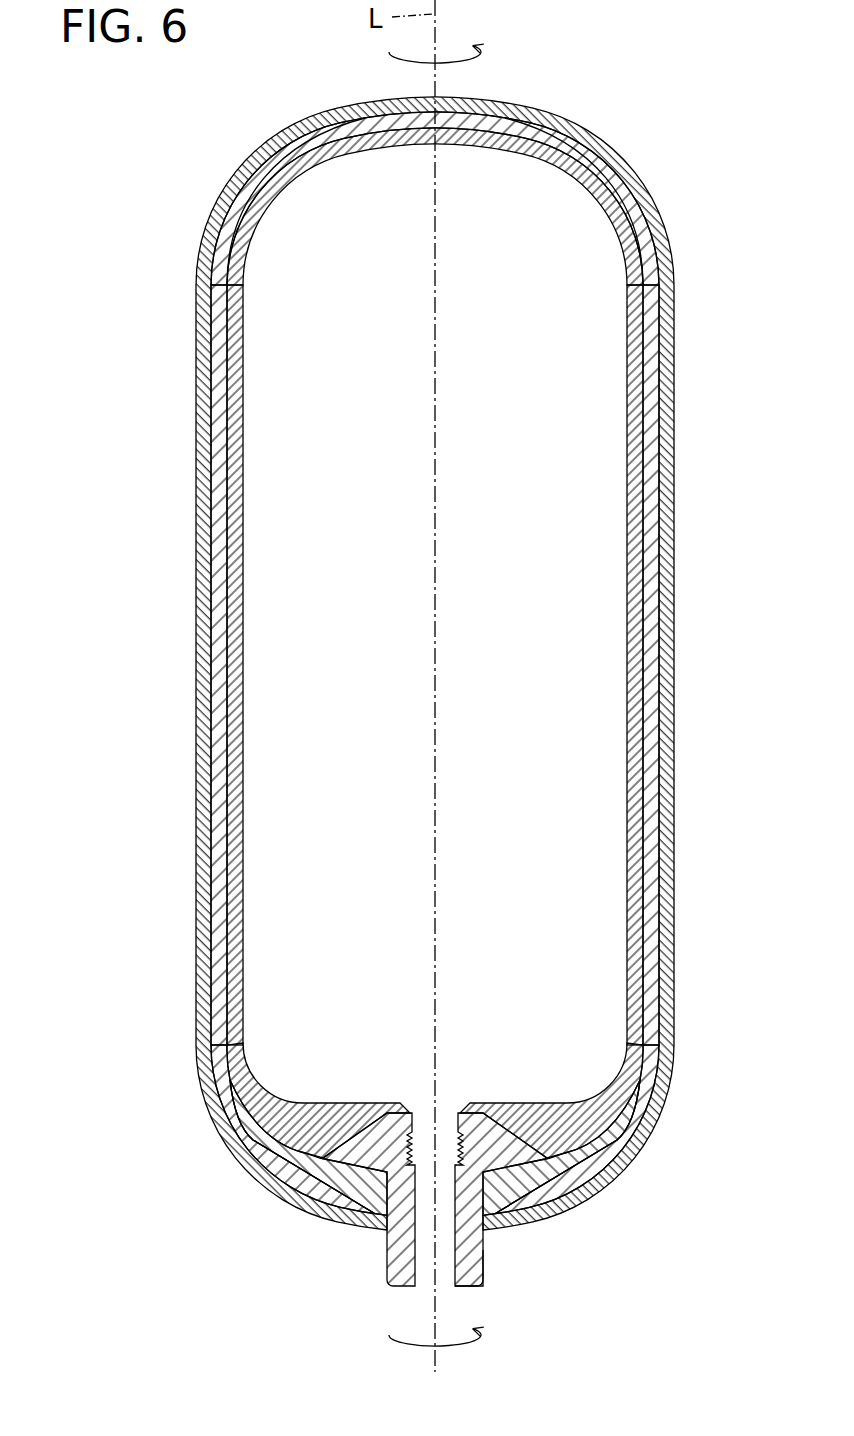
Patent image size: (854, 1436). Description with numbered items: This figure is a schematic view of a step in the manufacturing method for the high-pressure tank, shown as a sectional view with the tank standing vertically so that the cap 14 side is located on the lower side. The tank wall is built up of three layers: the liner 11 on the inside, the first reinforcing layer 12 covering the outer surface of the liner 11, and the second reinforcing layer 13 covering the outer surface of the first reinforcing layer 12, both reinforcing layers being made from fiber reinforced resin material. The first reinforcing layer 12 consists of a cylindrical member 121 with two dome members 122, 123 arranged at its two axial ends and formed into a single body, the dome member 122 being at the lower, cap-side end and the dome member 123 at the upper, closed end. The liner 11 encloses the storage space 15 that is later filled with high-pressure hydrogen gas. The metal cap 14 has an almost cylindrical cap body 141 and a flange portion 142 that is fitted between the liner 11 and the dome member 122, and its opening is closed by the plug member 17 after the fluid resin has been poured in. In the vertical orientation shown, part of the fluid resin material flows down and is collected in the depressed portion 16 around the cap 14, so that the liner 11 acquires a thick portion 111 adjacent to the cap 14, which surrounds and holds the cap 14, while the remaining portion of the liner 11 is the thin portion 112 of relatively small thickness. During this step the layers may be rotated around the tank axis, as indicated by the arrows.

The liner 11 is at (384, 643).
The thick portion 111 is at (566, 1112).
The thin portion 112 is at (640, 655).
The first reinforcing layer 12 is at (392, 678).
The cylindrical member 121 is at (230, 655).
The dome member 122 is at (283, 1190).
The dome member 123 is at (352, 130).
The second reinforcing layer 13 is at (200, 795).
The cap 14 is at (435, 1215).
The cap body 141 is at (373, 1230).
The flange portion 142 is at (347, 1188).
The storage space 15 is at (580, 478).
The depressed portion 16 is at (596, 1136).
The plug member 17 is at (484, 1250).